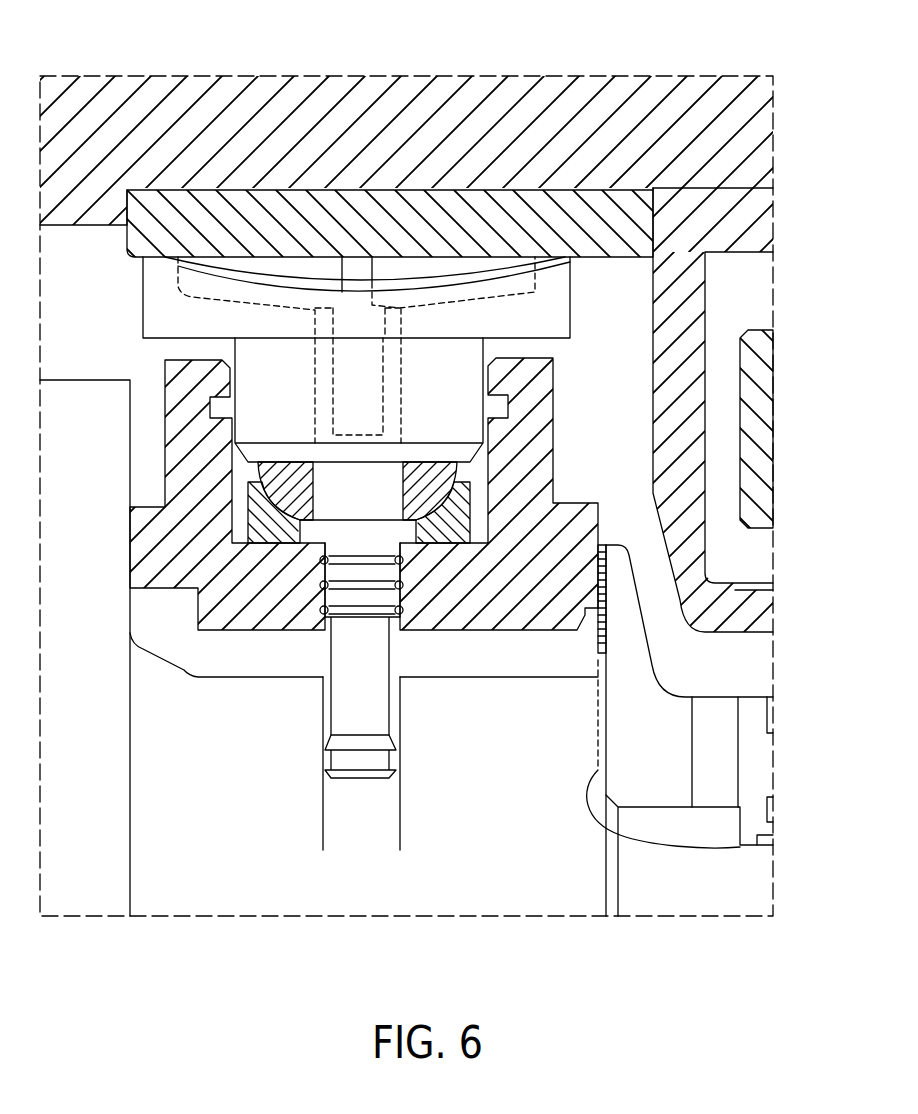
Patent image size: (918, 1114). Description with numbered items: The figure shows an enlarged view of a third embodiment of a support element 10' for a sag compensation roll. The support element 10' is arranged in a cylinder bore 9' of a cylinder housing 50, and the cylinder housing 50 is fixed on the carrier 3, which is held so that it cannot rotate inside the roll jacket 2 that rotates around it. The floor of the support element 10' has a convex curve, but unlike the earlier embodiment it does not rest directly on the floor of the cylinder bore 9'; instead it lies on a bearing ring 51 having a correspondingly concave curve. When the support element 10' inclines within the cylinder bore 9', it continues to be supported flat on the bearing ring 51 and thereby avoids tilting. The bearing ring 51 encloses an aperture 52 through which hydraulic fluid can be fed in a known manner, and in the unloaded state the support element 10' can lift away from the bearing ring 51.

The roll jacket 2 is at (478, 88).
The carrier 3 is at (505, 903).
The cylinder bore 9' is at (312, 594).
The support element 10' is at (390, 264).
The cylinder housing 50 is at (546, 373).
The bearing ring 51 is at (284, 537).
The aperture 52 is at (413, 535).